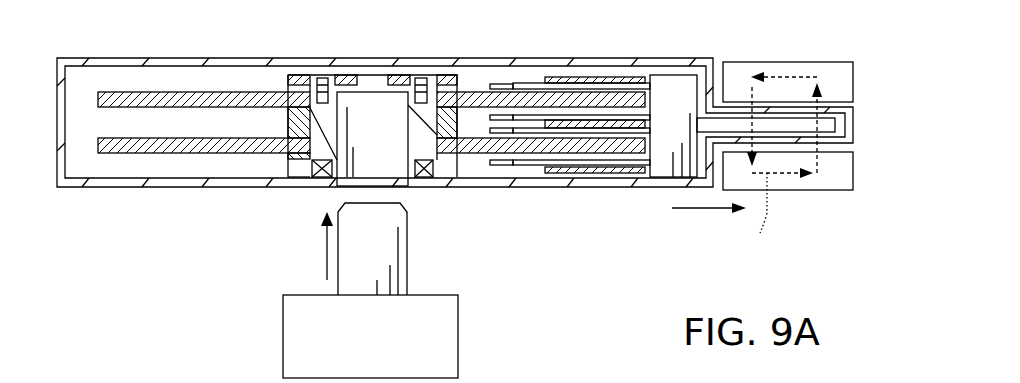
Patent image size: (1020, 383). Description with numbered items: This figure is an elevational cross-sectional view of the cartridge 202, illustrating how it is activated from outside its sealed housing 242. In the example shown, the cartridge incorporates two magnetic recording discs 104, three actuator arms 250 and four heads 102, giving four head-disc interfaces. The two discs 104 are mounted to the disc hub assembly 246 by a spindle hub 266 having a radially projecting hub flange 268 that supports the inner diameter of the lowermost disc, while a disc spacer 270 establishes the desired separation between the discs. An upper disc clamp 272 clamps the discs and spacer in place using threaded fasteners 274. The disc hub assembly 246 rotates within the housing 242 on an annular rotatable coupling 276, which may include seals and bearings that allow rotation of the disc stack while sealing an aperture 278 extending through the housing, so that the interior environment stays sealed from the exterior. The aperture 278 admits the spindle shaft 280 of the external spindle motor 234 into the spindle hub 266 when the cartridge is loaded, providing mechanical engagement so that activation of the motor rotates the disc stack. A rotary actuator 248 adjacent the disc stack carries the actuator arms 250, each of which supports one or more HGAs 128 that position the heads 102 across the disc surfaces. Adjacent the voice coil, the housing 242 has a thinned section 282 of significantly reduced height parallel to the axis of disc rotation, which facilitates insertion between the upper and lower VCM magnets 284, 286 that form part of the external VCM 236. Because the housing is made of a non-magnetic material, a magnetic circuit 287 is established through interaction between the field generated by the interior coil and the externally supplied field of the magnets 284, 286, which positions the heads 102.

The cartridge 202 is at (122, 33).
The magnetic recording disc 104 is at (187, 92).
The upper disc clamp 272 is at (297, 75).
The threaded fastener 274 is at (320, 78).
The spindle hub 266 is at (370, 75).
The head 102 is at (502, 84).
The HGA 128 is at (527, 83).
The actuator arm 250 is at (603, 77).
The rotary actuator 248 is at (679, 66).
The upper VCM magnet 284 is at (783, 62).
The thinned section 282 is at (857, 108).
The lower VCM magnet 286 is at (788, 190).
The magnetic circuit 287 is at (744, 214).
The external VCM 236 is at (806, 17).
The disc spacer 270 is at (288, 125).
The hub flange 268 is at (288, 170).
The housing 242 is at (115, 188).
The annular rotatable coupling 276 is at (323, 178).
The disc hub assembly 246 is at (282, 184).
The aperture 278 is at (398, 196).
The spindle shaft 280 is at (408, 272).
The external spindle motor 234 is at (458, 327).